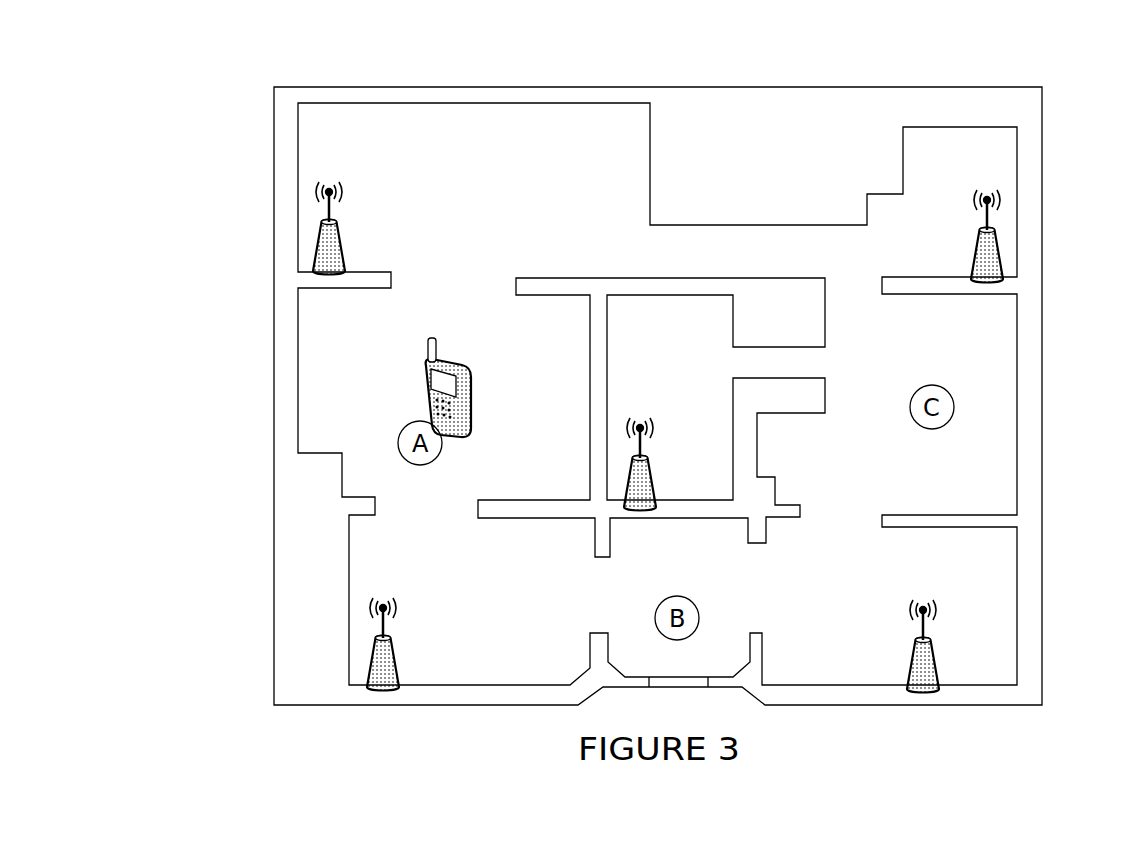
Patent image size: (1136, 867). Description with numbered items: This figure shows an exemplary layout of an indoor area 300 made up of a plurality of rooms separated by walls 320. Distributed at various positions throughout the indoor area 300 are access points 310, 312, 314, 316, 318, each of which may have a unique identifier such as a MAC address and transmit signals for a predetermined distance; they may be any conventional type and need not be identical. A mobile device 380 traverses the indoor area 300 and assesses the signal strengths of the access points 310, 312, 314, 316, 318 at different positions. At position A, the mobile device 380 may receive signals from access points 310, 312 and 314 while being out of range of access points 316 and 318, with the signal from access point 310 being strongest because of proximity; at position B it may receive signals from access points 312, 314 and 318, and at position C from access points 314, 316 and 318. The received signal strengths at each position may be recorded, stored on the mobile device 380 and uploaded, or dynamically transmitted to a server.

The indoor area 300 is at (276, 78).
The access point 310 is at (322, 256).
The access point 312 is at (380, 690).
The access point 314 is at (652, 480).
The access point 316 is at (998, 252).
The access point 318 is at (922, 680).
The walls 320 is at (298, 378).
The mobile device 380 is at (486, 303).